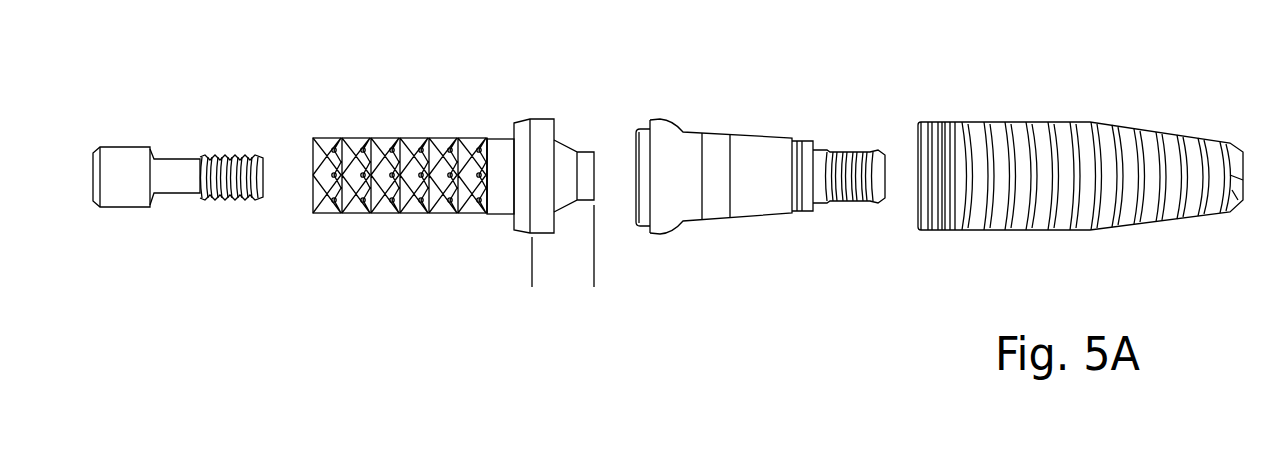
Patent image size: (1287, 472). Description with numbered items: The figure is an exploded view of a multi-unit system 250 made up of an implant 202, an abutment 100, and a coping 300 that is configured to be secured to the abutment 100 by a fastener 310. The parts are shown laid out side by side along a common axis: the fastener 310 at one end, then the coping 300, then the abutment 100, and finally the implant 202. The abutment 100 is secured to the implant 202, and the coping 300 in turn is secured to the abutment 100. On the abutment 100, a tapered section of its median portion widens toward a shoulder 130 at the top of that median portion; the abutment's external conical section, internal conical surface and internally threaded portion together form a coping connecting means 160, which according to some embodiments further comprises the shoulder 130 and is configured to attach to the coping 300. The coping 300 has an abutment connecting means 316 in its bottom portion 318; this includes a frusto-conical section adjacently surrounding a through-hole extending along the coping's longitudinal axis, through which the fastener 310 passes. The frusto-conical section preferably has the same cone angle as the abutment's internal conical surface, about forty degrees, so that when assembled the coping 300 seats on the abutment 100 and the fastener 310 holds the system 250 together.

The abutment 100 is at (672, 126).
The shoulder 130 is at (644, 228).
The coping connecting means 160 is at (635, 121).
The implant 202 is at (1078, 124).
The multi-unit system 250 is at (300, 256).
The coping 300 is at (502, 137).
The fastener 310 is at (127, 153).
The abutment connecting means 316 is at (562, 119).
The bottom portion 318 is at (594, 287).